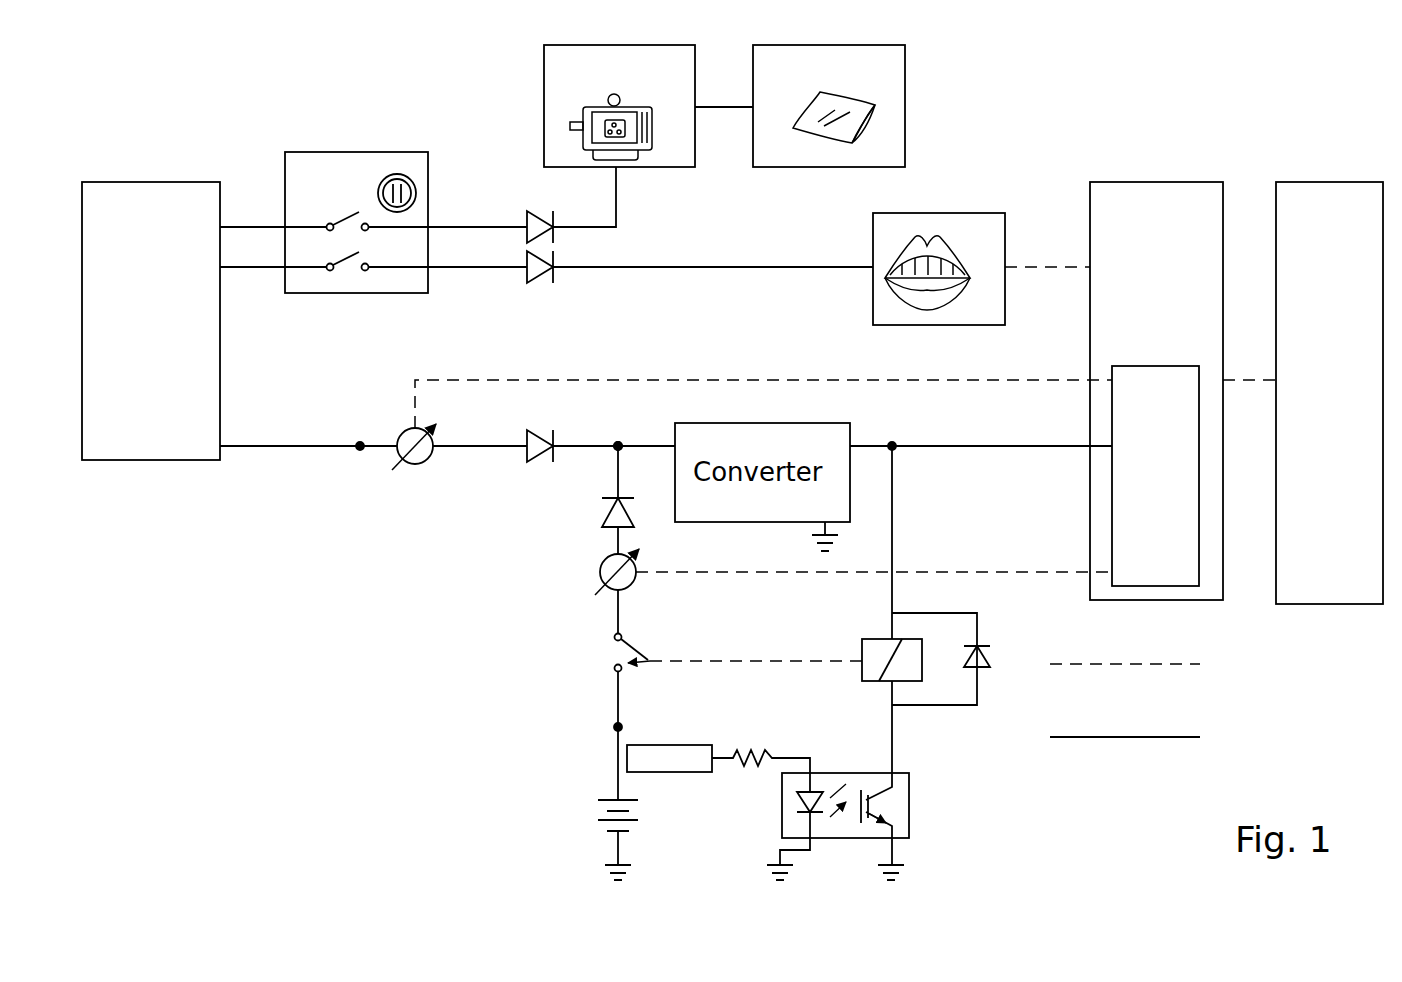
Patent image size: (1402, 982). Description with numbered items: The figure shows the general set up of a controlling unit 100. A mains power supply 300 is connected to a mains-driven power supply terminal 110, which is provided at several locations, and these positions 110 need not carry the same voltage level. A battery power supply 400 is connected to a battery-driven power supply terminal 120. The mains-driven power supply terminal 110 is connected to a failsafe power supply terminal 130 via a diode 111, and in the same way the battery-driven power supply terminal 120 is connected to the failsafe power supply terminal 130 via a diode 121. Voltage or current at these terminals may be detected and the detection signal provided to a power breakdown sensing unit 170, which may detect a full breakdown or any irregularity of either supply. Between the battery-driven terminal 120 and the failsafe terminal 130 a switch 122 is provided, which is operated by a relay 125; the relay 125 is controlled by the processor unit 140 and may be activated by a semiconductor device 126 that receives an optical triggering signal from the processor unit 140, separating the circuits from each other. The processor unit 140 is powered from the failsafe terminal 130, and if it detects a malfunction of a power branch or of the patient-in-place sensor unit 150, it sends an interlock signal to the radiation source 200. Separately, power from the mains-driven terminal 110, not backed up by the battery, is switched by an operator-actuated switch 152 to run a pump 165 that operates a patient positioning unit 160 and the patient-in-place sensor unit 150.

The controlling unit 100 is at (284, 98).
The mains-driven power supply terminal 110 is at (252, 243).
The diode 111 is at (526, 464).
The battery-driven power supply terminal 120 is at (616, 728).
The diode 121 is at (590, 525).
The switch 122 is at (709, 653).
The relay 125 is at (907, 609).
The semiconductor device 126 is at (798, 812).
The failsafe power supply terminal 130 is at (618, 430).
The processor unit 140 is at (1156, 391).
The patient-in-place sensor unit 150 is at (939, 269).
The switch 152 is at (345, 265).
The patient positioning unit 160 is at (829, 106).
The pump 165 is at (648, 106).
The power breakdown sensing unit 170 is at (1155, 476).
The radiation source 200 is at (1329, 393).
The mains power supply 300 is at (151, 321).
The battery power supply 400 is at (551, 806).